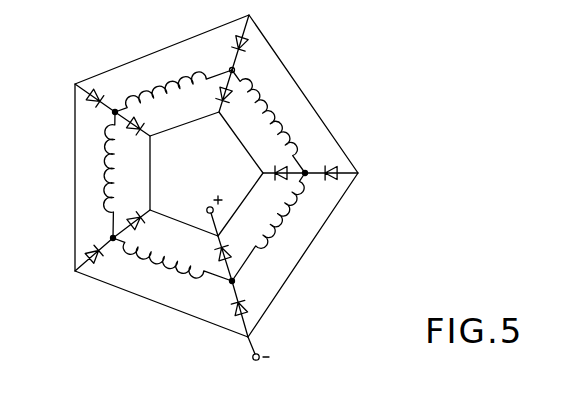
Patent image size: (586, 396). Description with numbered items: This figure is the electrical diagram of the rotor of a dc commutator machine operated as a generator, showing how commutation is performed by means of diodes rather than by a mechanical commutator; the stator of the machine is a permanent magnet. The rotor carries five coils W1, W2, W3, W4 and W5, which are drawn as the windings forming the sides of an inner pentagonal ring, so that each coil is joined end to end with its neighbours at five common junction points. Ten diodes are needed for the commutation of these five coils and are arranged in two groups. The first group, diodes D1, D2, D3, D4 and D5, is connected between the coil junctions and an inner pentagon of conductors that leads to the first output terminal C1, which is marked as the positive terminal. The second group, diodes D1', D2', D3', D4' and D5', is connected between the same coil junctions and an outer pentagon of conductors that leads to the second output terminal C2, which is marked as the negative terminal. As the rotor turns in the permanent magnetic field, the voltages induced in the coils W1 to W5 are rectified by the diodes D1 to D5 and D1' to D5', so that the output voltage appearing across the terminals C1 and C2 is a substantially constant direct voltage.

The coil W1 is at (163, 268).
The coil W2 is at (287, 233).
The coil W3 is at (283, 110).
The coil W4 is at (182, 78).
The coil W5 is at (101, 173).
The diode D1 is at (229, 255).
The diode D2 is at (281, 188).
The diode D3 is at (229, 97).
The diode D4 is at (141, 122).
The diode D5 is at (133, 219).
The diode D1' is at (265, 309).
The diode D2' is at (347, 193).
The diode D3' is at (269, 41).
The diode D4' is at (95, 72).
The diode D5' is at (88, 275).
The terminal C1 is at (206, 210).
The terminal C2 is at (252, 360).